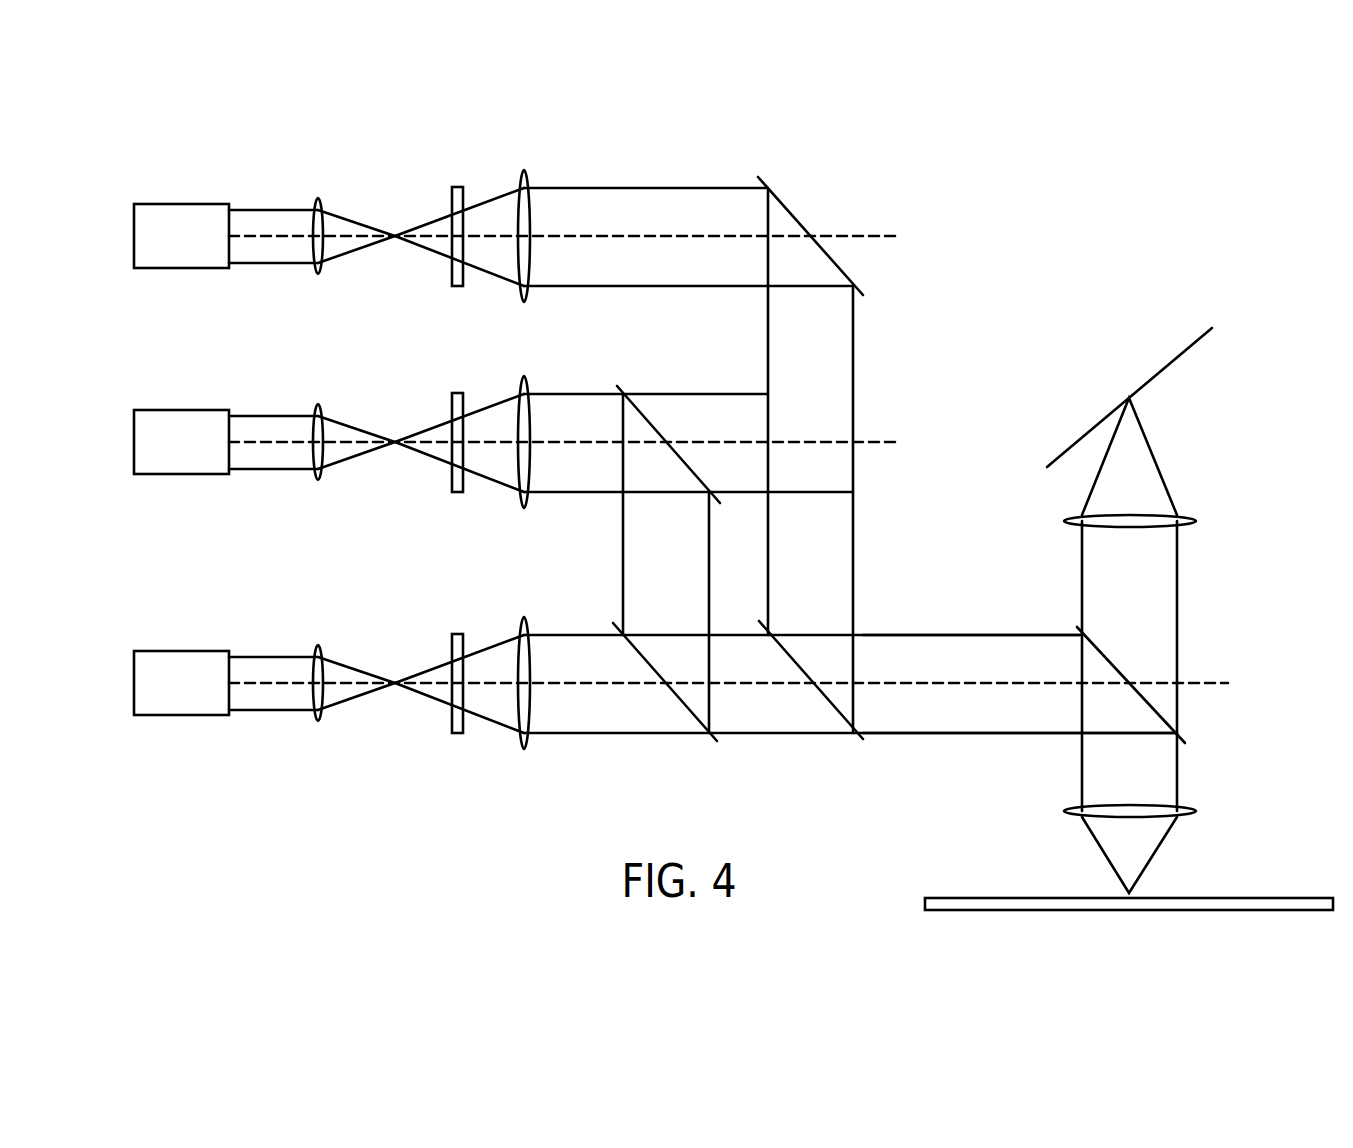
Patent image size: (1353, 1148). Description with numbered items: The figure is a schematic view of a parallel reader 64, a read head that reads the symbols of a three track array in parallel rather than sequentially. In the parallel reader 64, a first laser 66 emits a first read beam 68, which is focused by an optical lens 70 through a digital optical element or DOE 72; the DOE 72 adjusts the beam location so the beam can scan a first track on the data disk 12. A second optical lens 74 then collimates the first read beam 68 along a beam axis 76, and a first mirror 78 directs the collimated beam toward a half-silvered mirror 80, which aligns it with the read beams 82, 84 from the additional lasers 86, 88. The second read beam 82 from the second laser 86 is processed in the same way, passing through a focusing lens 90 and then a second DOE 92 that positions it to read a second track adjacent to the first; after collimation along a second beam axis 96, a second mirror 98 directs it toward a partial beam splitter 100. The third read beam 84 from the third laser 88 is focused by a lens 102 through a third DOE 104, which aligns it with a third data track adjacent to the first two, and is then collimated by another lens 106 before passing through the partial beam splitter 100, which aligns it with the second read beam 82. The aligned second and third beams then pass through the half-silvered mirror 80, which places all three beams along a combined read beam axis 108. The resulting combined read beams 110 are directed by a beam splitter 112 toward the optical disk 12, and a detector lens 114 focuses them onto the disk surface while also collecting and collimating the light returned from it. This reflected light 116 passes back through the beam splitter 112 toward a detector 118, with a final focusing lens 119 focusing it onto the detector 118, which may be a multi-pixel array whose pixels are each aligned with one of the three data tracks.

The data disk 12 is at (1310, 898).
The parallel reader 64 is at (108, 152).
The first laser 66 is at (134, 236).
The first read beam 68 is at (273, 210).
The optical lens 70 is at (321, 198).
The digital optical element (DOE) 72 is at (452, 200).
The second optical lens 74 is at (523, 176).
The beam axis 76 is at (880, 236).
The first mirror 78 is at (766, 180).
The 50/50 silvered mirror 80 is at (849, 740).
The second read beam 82 is at (273, 416).
The third read beam 84 is at (273, 655).
The second laser 86 is at (134, 442).
The third laser 88 is at (134, 682).
The focusing lens 90 is at (321, 404).
The second DOE 92 is at (452, 407).
The second beam axis 96 is at (882, 442).
The second mirror 98 is at (620, 386).
The partial beam splitter 100 is at (700, 742).
The lens 102 is at (321, 645).
The third DOE 104 is at (452, 648).
The lens 106 is at (523, 620).
The combined read beam axis 108 is at (1205, 683).
The combined read beams 110 is at (980, 634).
The beam splitter 112 is at (1170, 718).
The detector lens 114 is at (1195, 811).
The reflected light 116 is at (1180, 576).
The detector 118 is at (1175, 355).
The final focusing lens 119 is at (1195, 521).